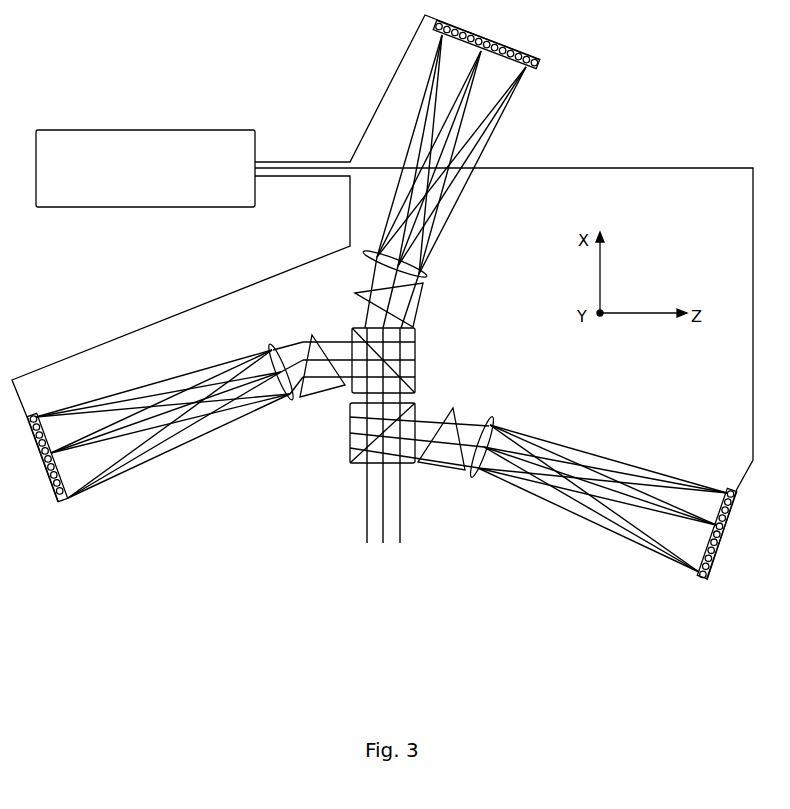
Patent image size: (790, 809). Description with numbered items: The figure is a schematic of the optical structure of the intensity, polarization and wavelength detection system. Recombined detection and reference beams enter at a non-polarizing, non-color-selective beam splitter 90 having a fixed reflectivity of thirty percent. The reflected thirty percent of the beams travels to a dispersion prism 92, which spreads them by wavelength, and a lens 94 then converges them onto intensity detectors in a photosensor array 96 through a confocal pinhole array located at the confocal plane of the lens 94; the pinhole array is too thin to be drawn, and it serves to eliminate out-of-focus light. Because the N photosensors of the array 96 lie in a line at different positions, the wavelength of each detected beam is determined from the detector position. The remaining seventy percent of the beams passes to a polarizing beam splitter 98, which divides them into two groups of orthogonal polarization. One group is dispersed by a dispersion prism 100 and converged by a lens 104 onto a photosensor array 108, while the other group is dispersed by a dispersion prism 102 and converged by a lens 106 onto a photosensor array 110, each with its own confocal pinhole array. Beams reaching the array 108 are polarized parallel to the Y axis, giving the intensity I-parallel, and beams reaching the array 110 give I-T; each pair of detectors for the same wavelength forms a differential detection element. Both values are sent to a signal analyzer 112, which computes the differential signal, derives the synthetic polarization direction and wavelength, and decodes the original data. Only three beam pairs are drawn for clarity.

The non-polarizing and non-color-selective beam splitter 90 is at (350, 423).
The dispersion prism 92 is at (456, 466).
The lens 94 is at (491, 416).
The photosensor array 96 is at (696, 584).
The polarizing beam splitter 98 is at (418, 352).
The dispersion prism 100 is at (312, 335).
The dispersion prism 102 is at (416, 304).
The lens 104 is at (271, 346).
The lens 106 is at (428, 268).
The photosensor array 108 is at (66, 502).
The photosensor array 110 is at (540, 63).
The signal analyzer 112 is at (137, 207).